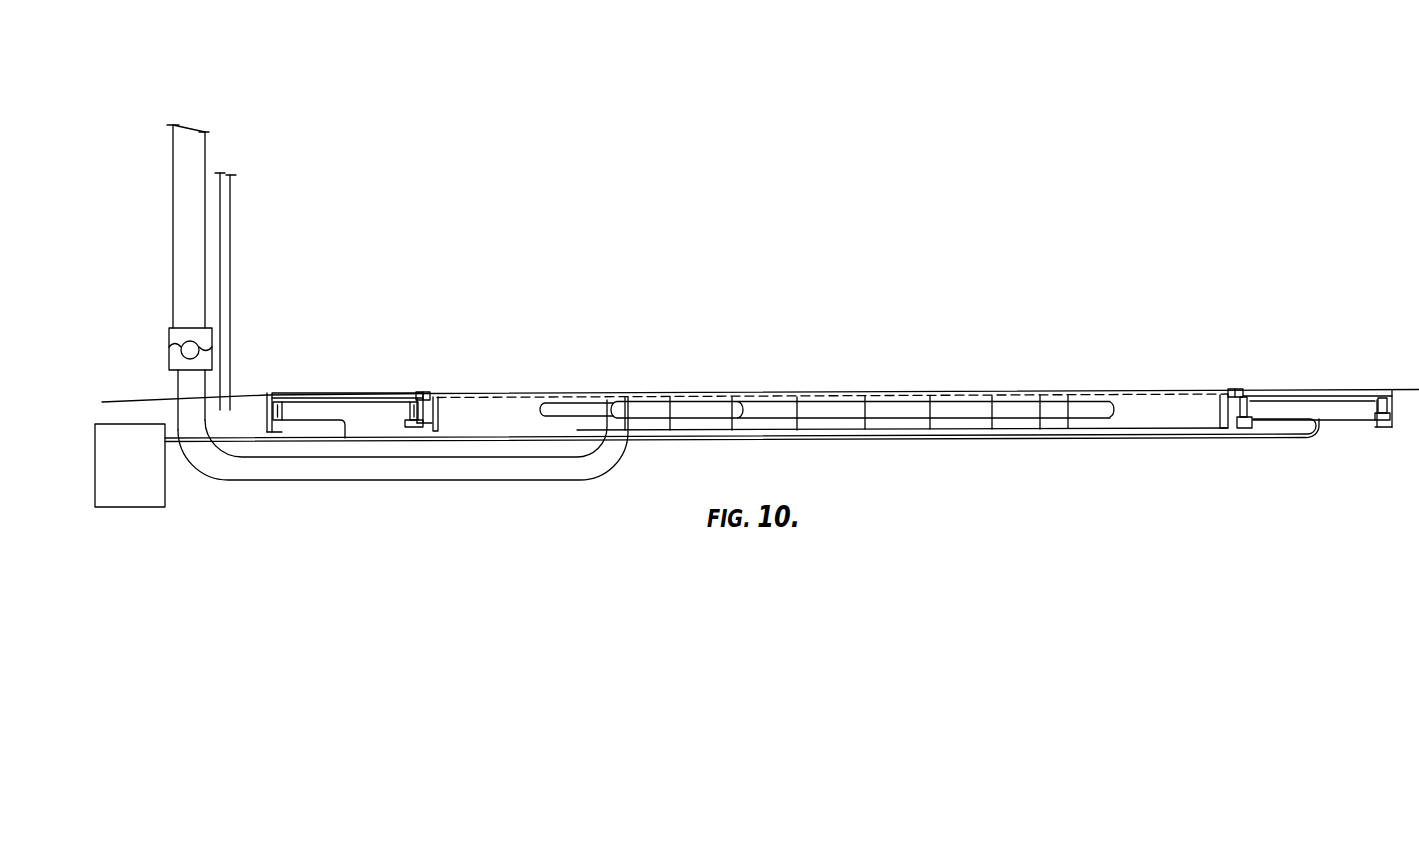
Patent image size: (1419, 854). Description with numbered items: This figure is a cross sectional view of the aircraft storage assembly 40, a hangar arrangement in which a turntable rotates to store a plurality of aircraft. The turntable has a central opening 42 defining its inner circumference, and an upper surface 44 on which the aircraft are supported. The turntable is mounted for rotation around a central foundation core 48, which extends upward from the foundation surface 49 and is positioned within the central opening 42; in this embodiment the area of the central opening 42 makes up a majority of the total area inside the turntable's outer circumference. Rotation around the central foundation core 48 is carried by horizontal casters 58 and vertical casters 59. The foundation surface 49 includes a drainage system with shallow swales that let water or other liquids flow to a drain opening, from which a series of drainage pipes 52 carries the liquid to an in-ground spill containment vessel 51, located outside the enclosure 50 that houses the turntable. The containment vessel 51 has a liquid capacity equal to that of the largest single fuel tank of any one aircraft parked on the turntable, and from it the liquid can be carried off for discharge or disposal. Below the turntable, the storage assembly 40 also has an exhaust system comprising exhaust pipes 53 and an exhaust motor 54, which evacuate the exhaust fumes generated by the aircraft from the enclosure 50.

The aircraft storage assembly 40 is at (346, 110).
The central opening 42 is at (435, 394).
The upper surface 44 is at (305, 393).
The central foundation core 48 is at (882, 398).
The foundation surface 49 is at (912, 431).
The enclosure 50 is at (223, 235).
The spill containment vessel 51 is at (130, 490).
The drainage pipes 52 is at (1037, 440).
The exhaust pipes 53 is at (182, 257).
The exhaust motor 54 is at (180, 340).
The horizontal casters 58 is at (430, 392).
The vertical casters 59 is at (403, 423).